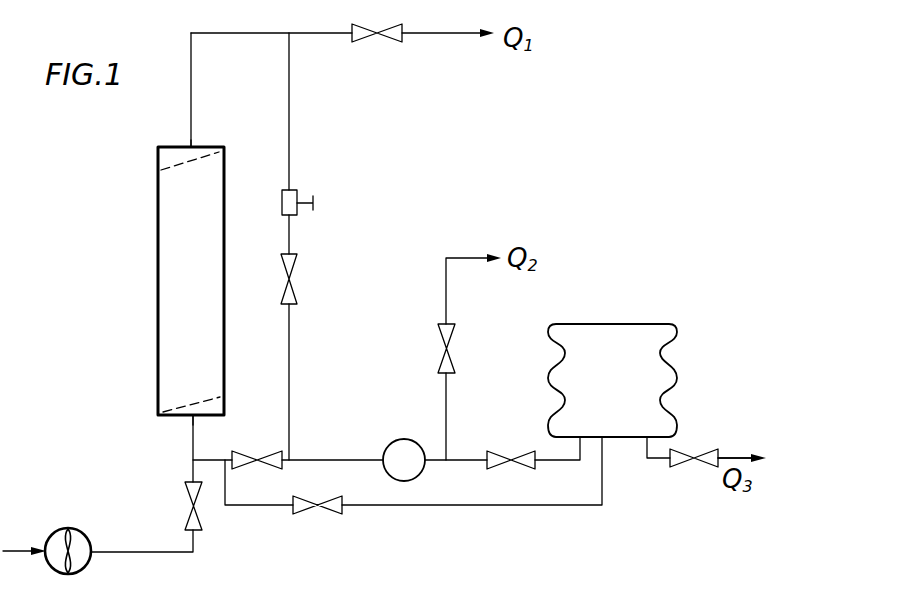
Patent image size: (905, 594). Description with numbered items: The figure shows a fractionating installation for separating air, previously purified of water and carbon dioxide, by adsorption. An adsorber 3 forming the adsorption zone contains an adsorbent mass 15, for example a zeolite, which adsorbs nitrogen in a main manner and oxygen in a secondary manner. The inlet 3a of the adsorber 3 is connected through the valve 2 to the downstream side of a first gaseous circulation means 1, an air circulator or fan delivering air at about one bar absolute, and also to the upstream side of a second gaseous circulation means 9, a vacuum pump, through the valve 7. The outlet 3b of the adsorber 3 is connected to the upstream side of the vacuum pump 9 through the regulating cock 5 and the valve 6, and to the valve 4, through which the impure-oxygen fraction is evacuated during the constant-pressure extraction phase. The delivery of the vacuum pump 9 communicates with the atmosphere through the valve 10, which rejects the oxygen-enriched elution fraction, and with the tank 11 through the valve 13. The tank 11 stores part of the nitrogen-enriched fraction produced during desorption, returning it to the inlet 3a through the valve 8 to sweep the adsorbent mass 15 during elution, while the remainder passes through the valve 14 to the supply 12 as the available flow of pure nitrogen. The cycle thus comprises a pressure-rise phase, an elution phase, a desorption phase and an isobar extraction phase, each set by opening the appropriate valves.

The first gaseous circulation means 1 is at (67, 528).
The valve 2 is at (184, 506).
The adsorber 3 is at (186, 241).
The inlet 3a is at (208, 429).
The outlet 3b is at (209, 132).
The valve 4 is at (377, 25).
The regulating cock 5 is at (308, 203).
The valve 6 is at (297, 279).
The valve 7 is at (257, 451).
The valve 8 is at (317, 516).
The second gaseous circulation means 9 is at (404, 447).
The valve 10 is at (459, 348).
The tank 11 is at (612, 380).
The supply 12 is at (737, 443).
The valve 13 is at (511, 449).
The valve 14 is at (694, 449).
The adsorbent mass 15 is at (191, 284).